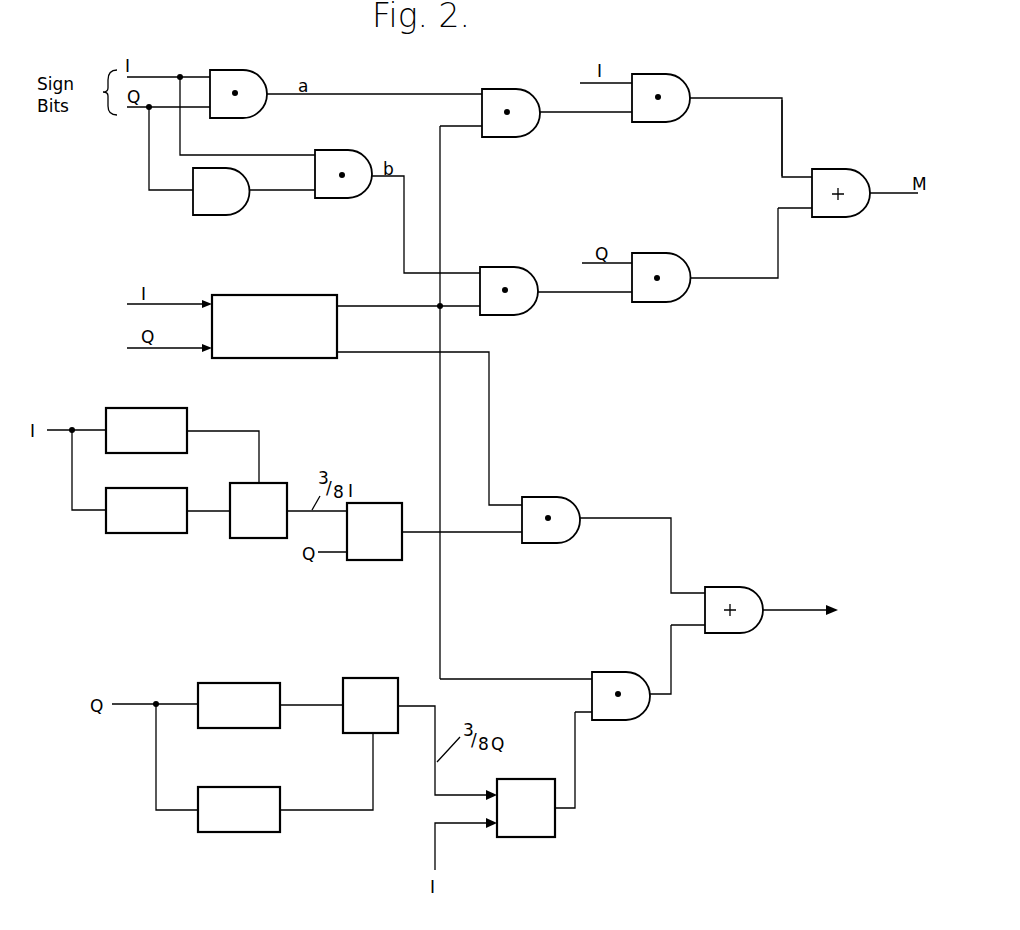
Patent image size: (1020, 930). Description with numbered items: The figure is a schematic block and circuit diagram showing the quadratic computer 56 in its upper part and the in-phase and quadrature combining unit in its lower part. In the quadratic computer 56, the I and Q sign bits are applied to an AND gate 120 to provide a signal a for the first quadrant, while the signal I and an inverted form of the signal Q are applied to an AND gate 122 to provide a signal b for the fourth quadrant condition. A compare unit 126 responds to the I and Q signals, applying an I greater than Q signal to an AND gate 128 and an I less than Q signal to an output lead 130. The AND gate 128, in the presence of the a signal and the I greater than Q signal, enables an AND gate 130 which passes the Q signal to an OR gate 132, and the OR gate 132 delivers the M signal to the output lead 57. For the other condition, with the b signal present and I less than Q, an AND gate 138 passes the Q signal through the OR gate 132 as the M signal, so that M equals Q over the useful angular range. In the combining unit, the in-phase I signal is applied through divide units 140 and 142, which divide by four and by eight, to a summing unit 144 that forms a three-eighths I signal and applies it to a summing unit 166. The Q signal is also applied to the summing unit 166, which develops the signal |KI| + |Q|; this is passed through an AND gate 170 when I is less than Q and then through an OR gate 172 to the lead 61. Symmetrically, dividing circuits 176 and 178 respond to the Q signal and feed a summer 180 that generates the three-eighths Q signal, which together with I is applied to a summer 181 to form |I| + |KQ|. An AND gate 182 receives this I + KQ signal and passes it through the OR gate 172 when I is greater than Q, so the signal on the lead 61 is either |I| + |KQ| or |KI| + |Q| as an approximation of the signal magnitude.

The quadratic computer 56 is at (801, 94).
The output lead 57 is at (900, 197).
The lead 61 is at (765, 616).
The AND gate 120 is at (255, 80).
The AND gate 122 is at (355, 160).
The compare unit 126 is at (330, 305).
The AND gate 128 is at (522, 131).
The AND gate 130 is at (682, 90).
The OR gate 132 is at (842, 172).
The AND gate 138 is at (525, 273).
The divide unit 140 is at (183, 415).
The divide unit 142 is at (108, 524).
The summing unit 144 is at (235, 526).
The summing unit 166 is at (387, 553).
The AND gate 170 is at (567, 507).
The OR gate 172 is at (738, 593).
The dividing circuit 176 is at (268, 685).
The dividing circuit 178 is at (207, 825).
The summer 180 is at (393, 683).
The summer 181 is at (547, 833).
The AND gate 182 is at (618, 677).